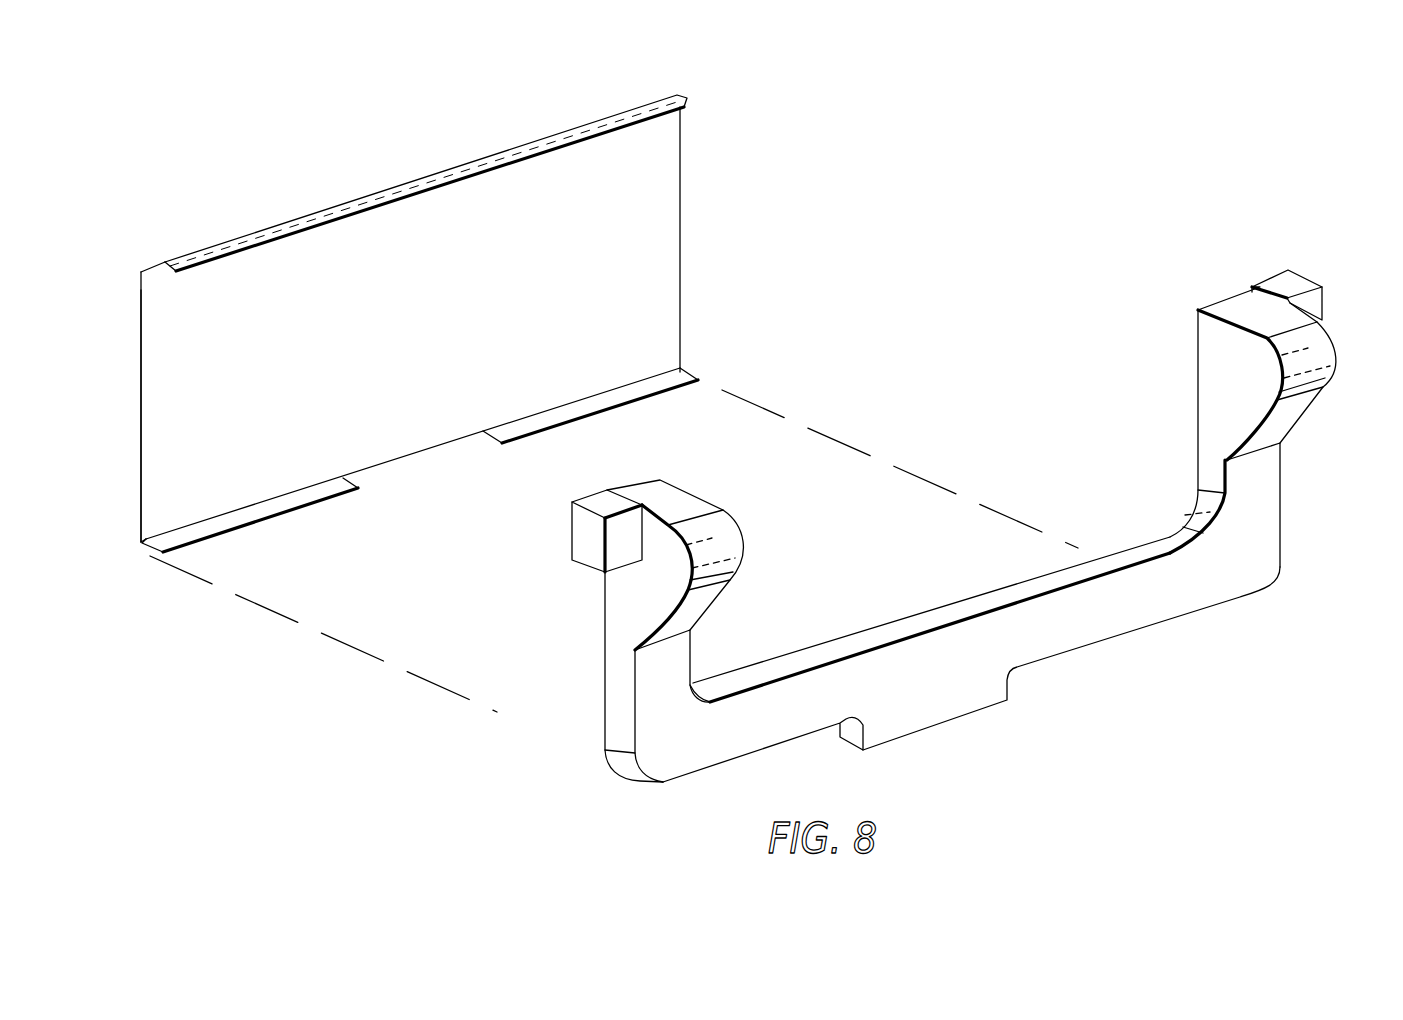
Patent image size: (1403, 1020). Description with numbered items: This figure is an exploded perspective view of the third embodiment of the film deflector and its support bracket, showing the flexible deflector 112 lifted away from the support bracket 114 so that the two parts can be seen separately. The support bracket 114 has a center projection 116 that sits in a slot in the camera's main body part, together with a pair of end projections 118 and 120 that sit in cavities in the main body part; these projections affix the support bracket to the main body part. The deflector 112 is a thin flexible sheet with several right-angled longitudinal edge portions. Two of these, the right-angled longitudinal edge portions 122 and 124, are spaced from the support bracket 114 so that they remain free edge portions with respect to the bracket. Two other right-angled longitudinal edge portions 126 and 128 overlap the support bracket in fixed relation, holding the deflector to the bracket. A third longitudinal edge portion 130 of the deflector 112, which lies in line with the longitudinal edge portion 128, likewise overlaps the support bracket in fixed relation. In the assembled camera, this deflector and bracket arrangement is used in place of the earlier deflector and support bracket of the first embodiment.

The flexible deflector 112 is at (424, 323).
The support bracket 114 is at (939, 536).
The center projection 116 is at (955, 710).
The end projection 118 is at (582, 530).
The end projection 120 is at (1298, 277).
The right-angled longitudinal edge portion 122 is at (385, 190).
The right-angled longitudinal edge portion 124 is at (683, 200).
The right-angled longitudinal edge portion 126 is at (140, 369).
The right-angled longitudinal edge portion 128 is at (250, 505).
The third longitudinal edge portion 130 is at (563, 413).